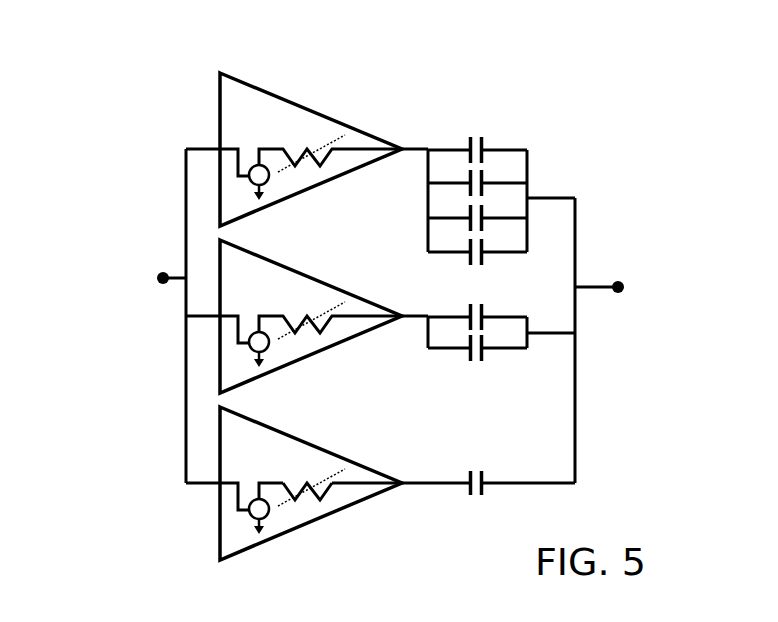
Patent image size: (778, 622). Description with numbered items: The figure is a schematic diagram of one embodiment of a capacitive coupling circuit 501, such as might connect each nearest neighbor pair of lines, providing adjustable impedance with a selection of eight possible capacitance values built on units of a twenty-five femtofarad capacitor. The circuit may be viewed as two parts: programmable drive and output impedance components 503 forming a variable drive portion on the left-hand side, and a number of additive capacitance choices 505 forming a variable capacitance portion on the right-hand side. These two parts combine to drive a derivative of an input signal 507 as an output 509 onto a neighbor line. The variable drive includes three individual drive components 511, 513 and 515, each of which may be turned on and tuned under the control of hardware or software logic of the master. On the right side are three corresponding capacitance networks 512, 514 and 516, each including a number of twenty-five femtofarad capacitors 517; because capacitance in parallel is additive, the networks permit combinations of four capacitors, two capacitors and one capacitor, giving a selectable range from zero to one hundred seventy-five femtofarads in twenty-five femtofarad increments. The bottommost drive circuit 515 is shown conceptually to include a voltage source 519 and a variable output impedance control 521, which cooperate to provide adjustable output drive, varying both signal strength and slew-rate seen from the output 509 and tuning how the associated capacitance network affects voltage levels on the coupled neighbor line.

The capacitive coupling circuit 501 is at (122, 176).
The programmable drive and output impedance components 503 is at (322, 78).
The additive capacitance choices 505 is at (496, 82).
The input signal 507 is at (162, 272).
The output 509 is at (622, 283).
The drive component 511 is at (348, 128).
The capacitance network 512 is at (531, 145).
The drive component 513 is at (318, 279).
The capacitance network 514 is at (531, 311).
The drive circuit 515 is at (294, 486).
The capacitance network 516 is at (531, 477).
The capacitors 517 is at (470, 340).
The voltage source 519 is at (272, 518).
The variable output impedance control 521 is at (322, 503).